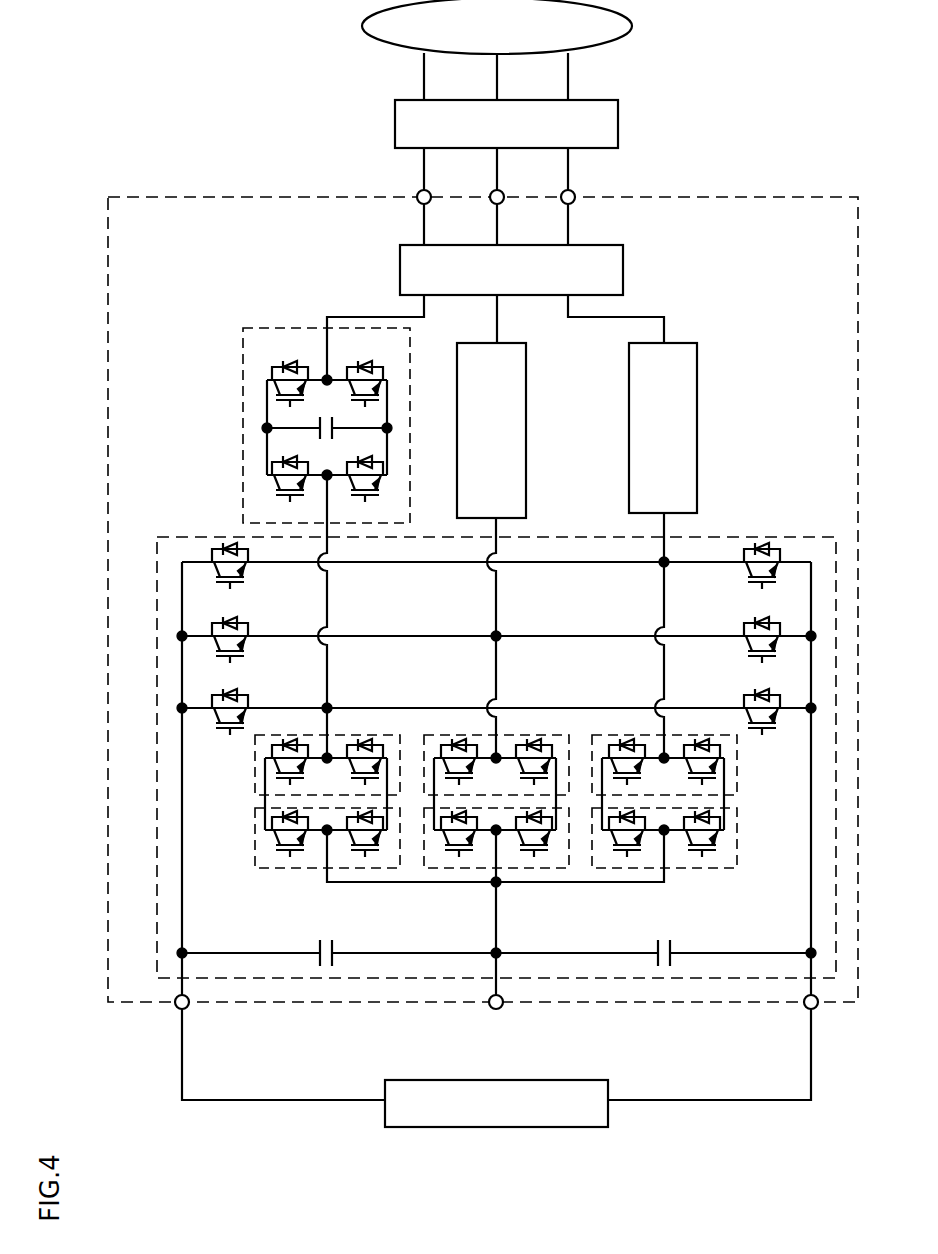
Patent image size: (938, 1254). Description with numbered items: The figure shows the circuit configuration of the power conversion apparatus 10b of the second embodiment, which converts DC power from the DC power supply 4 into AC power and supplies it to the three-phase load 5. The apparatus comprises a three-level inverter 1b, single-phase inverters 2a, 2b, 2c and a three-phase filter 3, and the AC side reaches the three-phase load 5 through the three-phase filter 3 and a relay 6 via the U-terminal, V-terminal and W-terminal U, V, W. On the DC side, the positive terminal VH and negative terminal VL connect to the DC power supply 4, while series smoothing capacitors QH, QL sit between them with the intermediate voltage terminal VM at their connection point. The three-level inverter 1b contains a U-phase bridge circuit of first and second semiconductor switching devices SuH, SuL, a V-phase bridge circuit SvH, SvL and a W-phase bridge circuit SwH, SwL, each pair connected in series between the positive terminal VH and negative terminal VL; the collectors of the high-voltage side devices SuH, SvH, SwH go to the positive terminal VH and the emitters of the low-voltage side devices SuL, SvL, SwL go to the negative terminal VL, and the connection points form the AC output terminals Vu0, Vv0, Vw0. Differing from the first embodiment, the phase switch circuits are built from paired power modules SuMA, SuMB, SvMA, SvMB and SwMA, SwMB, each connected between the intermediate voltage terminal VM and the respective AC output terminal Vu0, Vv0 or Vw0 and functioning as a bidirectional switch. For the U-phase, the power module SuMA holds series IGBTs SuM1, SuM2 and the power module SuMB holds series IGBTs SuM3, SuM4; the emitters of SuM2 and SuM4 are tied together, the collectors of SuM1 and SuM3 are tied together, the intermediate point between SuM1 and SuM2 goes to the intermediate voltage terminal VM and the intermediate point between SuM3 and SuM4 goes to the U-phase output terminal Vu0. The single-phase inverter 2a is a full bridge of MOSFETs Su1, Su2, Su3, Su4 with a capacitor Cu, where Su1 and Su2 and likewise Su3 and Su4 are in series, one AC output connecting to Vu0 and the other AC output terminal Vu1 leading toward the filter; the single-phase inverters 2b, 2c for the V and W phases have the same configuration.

The three-phase load 5 is at (372, 18).
The relay 6 is at (395, 127).
The three-phase filter 3 is at (400, 250).
The DC power supply 4 is at (385, 1087).
The power conversion apparatus 10b is at (108, 806).
The three-level inverter 1b is at (157, 740).
The single-phase inverter 2a is at (300, 405).
The single-phase inverter 2b is at (457, 438).
The single-phase inverter 2c is at (697, 432).
The U-terminal U is at (419, 192).
The V-terminal V is at (492, 192).
The W-terminal W is at (563, 192).
The positive terminal VH is at (177, 1008).
The intermediate voltage terminal VM is at (491, 1008).
The negative terminal VL is at (806, 1008).
The smoothing capacitor QH is at (339, 966).
The smoothing capacitor QL is at (653, 965).
The capacitor Cu is at (327, 415).
The AC output terminal Vu1 is at (325, 378).
The AC output terminal Vu0 is at (330, 704).
The AC output terminal Vv0 is at (494, 633).
The AC output terminal Vw0 is at (662, 564).
The switch device Su1 is at (280, 484).
The switch device Su2 is at (375, 484).
The switch device Su3 is at (280, 372).
The switch device Su4 is at (375, 372).
The first semiconductor switching device SuH is at (222, 720).
The first semiconductor switching device SvH is at (222, 647).
The first semiconductor switching device SwH is at (222, 574).
The second semiconductor switching device SuL is at (770, 719).
The second semiconductor switching device SvL is at (770, 646).
The second semiconductor switching device SwL is at (770, 574).
The semiconductor switching device SuM1 is at (292, 862).
The semiconductor switching device SuM2 is at (368, 862).
The semiconductor switching device SuM3 is at (288, 735).
The semiconductor switching device SuM4 is at (380, 735).
The power module SuMA is at (304, 867).
The power module SuMB is at (304, 733).
The power module SvMA is at (540, 868).
The power module SvMB is at (522, 735).
The power module SwMA is at (690, 868).
The power module SwMB is at (690, 735).